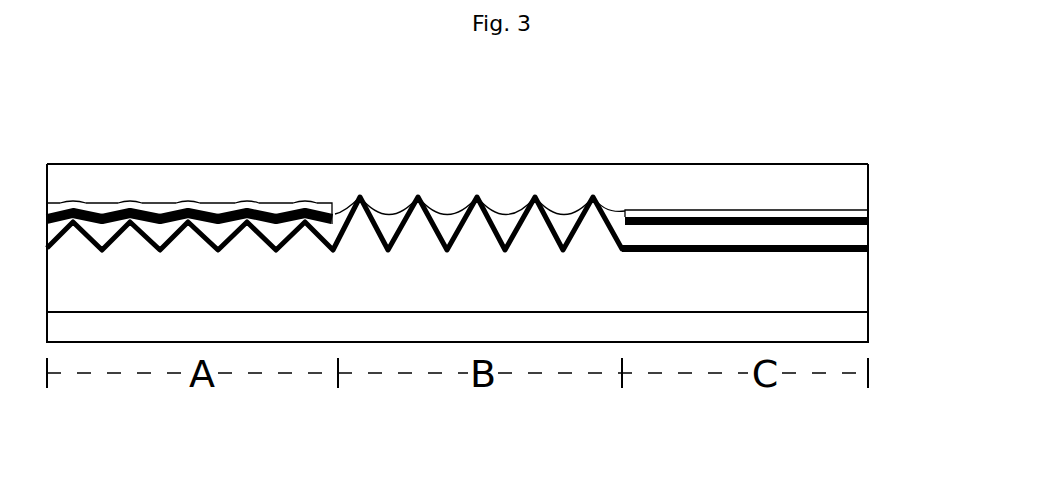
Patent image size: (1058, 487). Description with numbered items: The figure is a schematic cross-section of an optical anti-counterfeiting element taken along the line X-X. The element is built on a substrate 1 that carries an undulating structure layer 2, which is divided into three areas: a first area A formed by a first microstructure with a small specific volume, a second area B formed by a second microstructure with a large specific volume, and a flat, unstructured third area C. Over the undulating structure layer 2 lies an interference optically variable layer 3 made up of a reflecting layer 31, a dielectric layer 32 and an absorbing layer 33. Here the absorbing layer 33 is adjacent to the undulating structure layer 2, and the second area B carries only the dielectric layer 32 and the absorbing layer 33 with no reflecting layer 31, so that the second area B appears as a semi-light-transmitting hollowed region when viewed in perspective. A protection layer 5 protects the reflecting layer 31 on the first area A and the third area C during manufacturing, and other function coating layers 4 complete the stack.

The substrate 1 is at (855, 327).
The undulating structure layer 2 is at (855, 275).
The interference optically variable layer 3 is at (501, 226).
The reflecting layer 31 is at (855, 220).
The dielectric layer 32 is at (855, 232).
The absorbing layer 33 is at (855, 248).
The other function coating layers 4 is at (855, 172).
The protection layer 5 is at (857, 213).